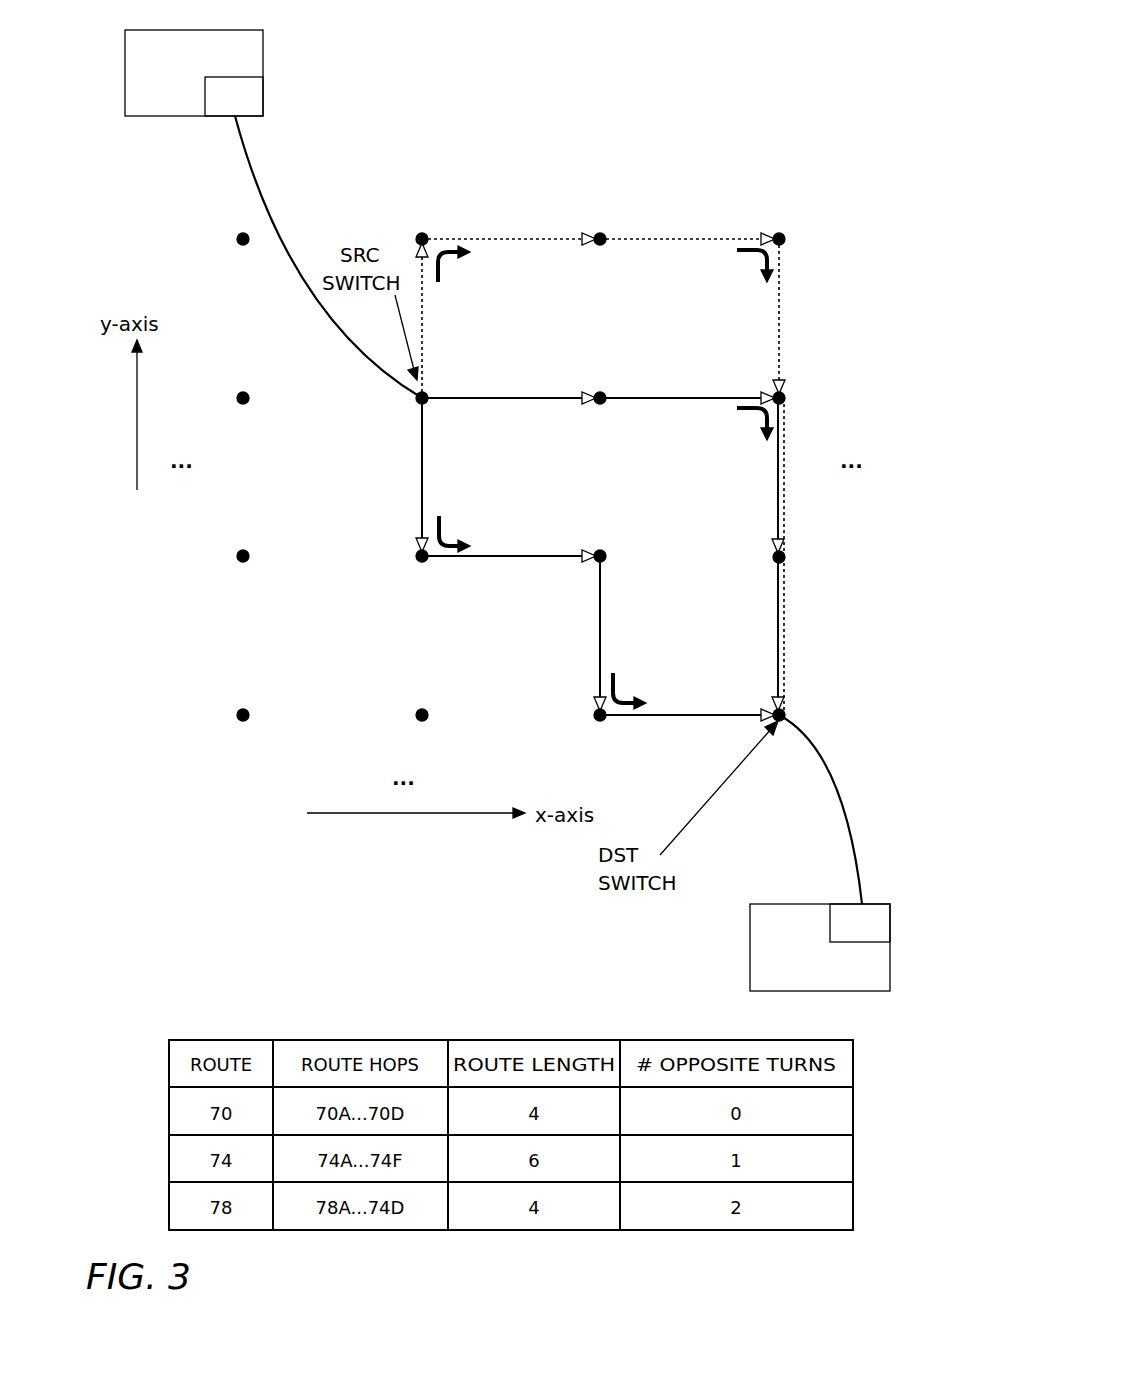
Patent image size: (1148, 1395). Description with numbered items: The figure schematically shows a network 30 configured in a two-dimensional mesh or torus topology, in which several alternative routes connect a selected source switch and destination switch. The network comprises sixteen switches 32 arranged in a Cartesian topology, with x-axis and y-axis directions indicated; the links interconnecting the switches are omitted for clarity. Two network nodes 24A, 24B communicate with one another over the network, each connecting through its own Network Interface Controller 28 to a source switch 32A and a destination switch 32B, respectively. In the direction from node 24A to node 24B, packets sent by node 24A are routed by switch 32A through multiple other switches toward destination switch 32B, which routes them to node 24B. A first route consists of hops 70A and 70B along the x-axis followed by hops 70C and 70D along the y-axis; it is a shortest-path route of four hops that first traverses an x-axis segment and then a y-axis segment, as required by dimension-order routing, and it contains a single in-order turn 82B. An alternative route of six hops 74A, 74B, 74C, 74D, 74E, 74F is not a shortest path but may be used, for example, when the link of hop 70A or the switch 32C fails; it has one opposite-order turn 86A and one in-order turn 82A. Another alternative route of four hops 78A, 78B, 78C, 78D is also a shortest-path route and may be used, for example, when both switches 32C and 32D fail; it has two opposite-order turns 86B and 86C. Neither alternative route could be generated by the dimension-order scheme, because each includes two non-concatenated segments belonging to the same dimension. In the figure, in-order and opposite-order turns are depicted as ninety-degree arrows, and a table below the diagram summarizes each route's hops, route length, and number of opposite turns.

The network node 24A is at (263, 37).
The network node 24B is at (750, 951).
The Network Interface Controller 28 is at (263, 91).
The network 30 is at (822, 45).
The switch 32 is at (243, 232).
The source switch 32A is at (430, 394).
The destination switch 32B is at (788, 715).
The switch 32C is at (600, 391).
The switch 32D is at (422, 708).
The hop 70A is at (512, 396).
The hop 70B is at (705, 396).
The hop 70C is at (777, 492).
The hop 70D is at (777, 610).
The hop 74A is at (424, 303).
The hop 74B is at (494, 238).
The hop 74C is at (689, 238).
The hop 74D is at (777, 307).
The hop 74E is at (786, 498).
The hop 74F is at (786, 640).
The hop 78A is at (424, 452).
The hop 78B is at (515, 558).
The hop 78C is at (598, 672).
The hop 78D is at (705, 713).
The in-order turn 82A is at (755, 283).
The in-order turn 82B is at (755, 441).
The opposite-order turn 86A is at (443, 268).
The opposite-order turn 86B is at (455, 530).
The opposite-order turn 86C is at (632, 692).